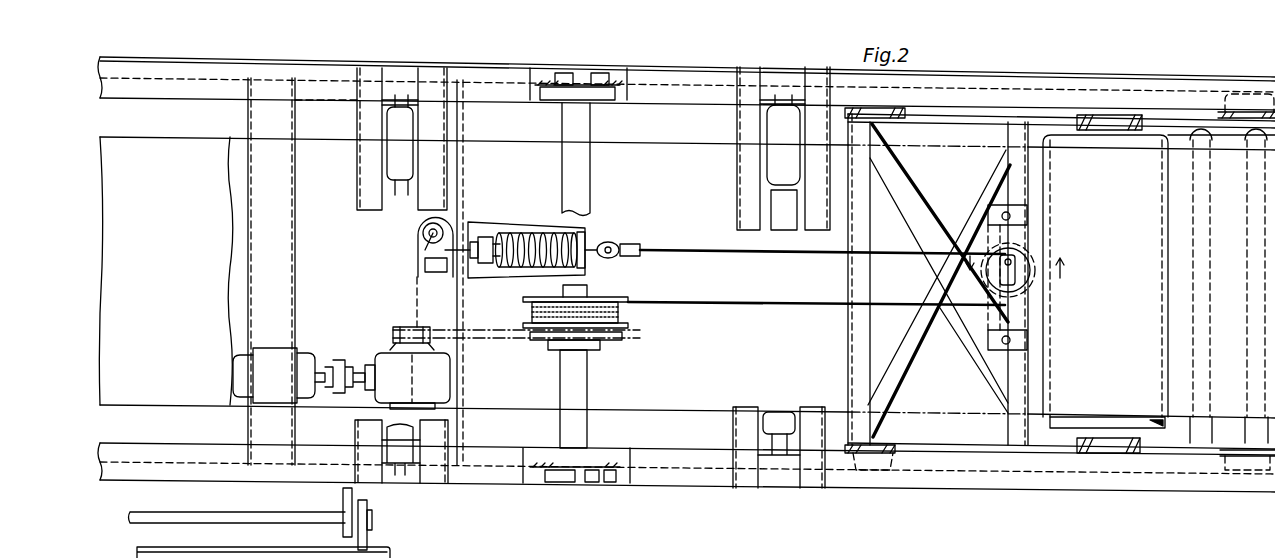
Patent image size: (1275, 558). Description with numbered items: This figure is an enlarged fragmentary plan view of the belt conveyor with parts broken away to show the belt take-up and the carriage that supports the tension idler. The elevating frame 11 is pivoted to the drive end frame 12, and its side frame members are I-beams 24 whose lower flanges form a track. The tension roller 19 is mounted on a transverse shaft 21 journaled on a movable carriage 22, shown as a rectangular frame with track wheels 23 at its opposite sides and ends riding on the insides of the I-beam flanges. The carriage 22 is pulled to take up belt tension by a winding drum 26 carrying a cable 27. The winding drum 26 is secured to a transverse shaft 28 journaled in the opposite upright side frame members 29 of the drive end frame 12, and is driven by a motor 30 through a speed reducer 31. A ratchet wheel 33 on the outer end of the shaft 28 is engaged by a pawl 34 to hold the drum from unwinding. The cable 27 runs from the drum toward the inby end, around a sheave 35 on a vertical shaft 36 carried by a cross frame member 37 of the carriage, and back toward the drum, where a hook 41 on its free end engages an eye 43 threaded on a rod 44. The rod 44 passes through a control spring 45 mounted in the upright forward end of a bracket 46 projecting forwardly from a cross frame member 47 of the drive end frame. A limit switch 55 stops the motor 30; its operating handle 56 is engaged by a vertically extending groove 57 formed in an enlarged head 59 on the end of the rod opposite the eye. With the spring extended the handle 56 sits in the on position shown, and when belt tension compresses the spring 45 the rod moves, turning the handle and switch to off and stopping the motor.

The elevating frame 11 is at (1242, 90).
The drive end frame 12 is at (298, 58).
The tension roller 19 is at (1112, 288).
The transverse shaft 21 is at (1081, 432).
The carriage 22 is at (1036, 318).
The track wheels 23 is at (907, 120).
The I-beams 24 is at (686, 277).
The winding drum 26 is at (585, 332).
The cable 27 is at (728, 306).
The transverse shaft 28 is at (560, 390).
The upright side frame members 29 is at (548, 90).
The motor 30 is at (306, 349).
The speed reducer 31 is at (382, 346).
The ratchet wheel 33 is at (602, 484).
The pawl 34 is at (556, 484).
The sheave 35 is at (1034, 262).
The vertical shaft 36 is at (1022, 290).
The cross frame member 37 is at (1020, 340).
The hook 41 is at (654, 250).
The eye 43 is at (634, 244).
The rod 44 is at (614, 222).
The control spring 45 is at (534, 236).
The bracket 46 is at (531, 295).
The cross frame member 47 is at (460, 172).
The limit switch 55 is at (421, 247).
The operating handle 56 is at (420, 235).
The groove 57 is at (424, 249).
The enlarged head 59 is at (432, 274).